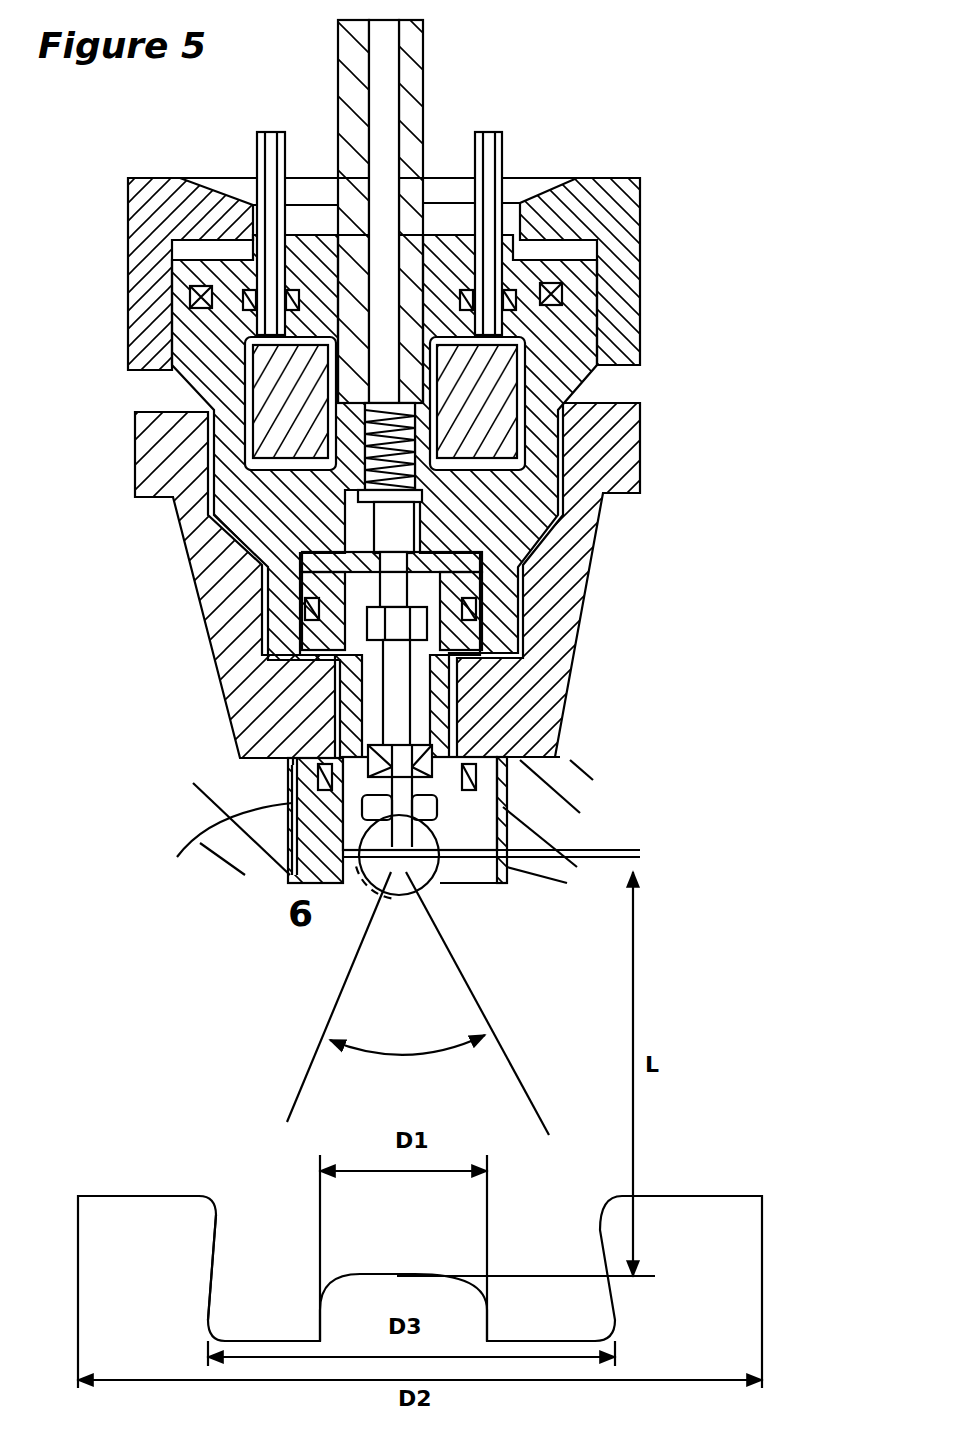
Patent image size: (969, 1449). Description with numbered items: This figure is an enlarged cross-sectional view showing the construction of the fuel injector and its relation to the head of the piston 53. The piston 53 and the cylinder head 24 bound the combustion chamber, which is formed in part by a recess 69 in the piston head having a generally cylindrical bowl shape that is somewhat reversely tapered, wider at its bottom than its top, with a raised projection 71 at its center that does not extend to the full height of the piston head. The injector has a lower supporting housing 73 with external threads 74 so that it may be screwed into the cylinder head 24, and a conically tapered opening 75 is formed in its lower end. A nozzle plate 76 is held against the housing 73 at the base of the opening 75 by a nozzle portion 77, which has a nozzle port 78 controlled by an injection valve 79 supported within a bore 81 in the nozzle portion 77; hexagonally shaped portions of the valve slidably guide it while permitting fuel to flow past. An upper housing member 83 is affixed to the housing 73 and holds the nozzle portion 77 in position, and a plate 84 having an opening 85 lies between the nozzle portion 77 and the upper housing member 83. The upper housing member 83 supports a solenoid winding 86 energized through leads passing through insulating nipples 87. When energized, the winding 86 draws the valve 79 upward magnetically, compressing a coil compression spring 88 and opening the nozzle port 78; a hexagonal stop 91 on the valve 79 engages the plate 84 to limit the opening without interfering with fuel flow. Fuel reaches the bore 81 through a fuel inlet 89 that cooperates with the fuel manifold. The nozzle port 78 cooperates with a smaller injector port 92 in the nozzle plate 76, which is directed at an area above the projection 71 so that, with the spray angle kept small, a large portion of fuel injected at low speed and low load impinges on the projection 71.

The raised projection 71 is at (636, 163).
The fuel inlet 89 is at (422, 82).
The insulating nipples 87 is at (257, 153).
The solenoid winding 86 is at (510, 352).
The coil compression spring 88 is at (523, 447).
The upper housing member 83 is at (547, 483).
The opening 85 is at (360, 520).
The hexagonal stop 91 is at (300, 607).
The plate 84 is at (440, 592).
The lower supporting housing 73 is at (500, 668).
The injection valve 79 is at (400, 697).
The bore 81 is at (433, 768).
The nozzle port 78 is at (278, 758).
The cylinder head 24 is at (583, 802).
The external threads 74 is at (292, 872).
The nozzle portion 77 is at (430, 822).
The conically tapered opening 75 is at (433, 888).
The injector port 92 is at (432, 912).
The nozzle plate 76 is at (392, 880).
The recess 69 is at (217, 1247).
The piston 53 is at (743, 1281).